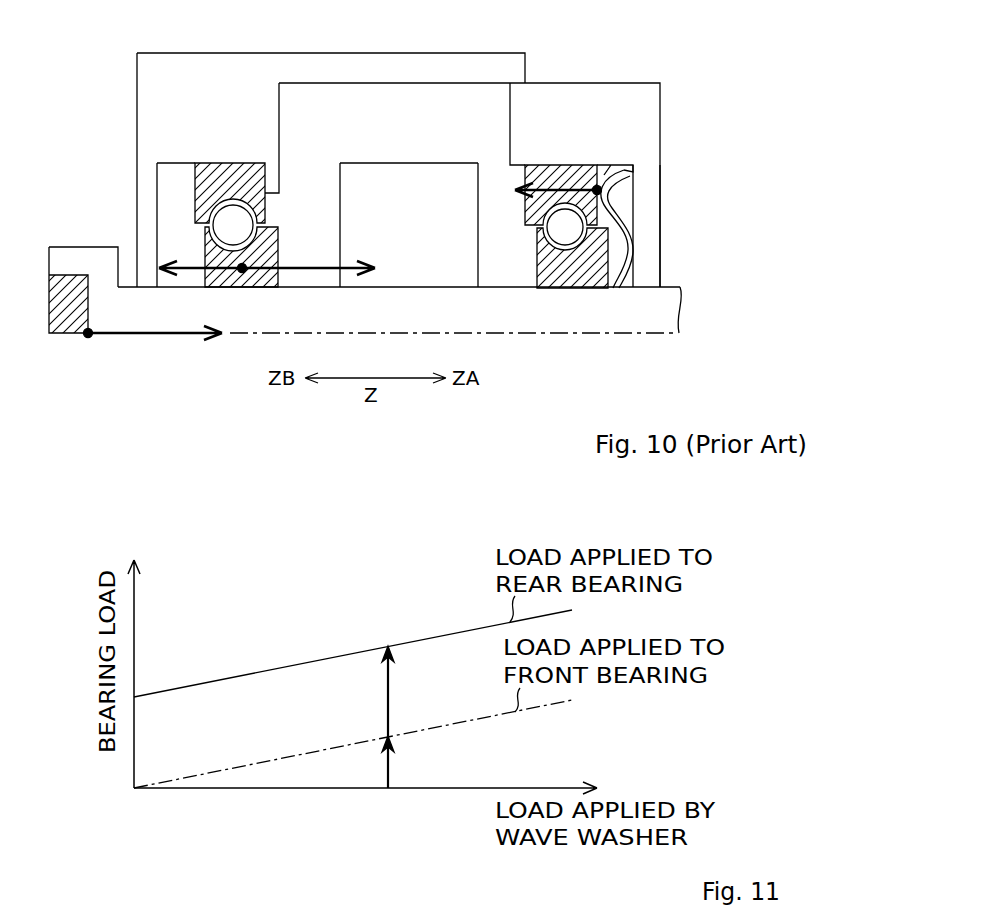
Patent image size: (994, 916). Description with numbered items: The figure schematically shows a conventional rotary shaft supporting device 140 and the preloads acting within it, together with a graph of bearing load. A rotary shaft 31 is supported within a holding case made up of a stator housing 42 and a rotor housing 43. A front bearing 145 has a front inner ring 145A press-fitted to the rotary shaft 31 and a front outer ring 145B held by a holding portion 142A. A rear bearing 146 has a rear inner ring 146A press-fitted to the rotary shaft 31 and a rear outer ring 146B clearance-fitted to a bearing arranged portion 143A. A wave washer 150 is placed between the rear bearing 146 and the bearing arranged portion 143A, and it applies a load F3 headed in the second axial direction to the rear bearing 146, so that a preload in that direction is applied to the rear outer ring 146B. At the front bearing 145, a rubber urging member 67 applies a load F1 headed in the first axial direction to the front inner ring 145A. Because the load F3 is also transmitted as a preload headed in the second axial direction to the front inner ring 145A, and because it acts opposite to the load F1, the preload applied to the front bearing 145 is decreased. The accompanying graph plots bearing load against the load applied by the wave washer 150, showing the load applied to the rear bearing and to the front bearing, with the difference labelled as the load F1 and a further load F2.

In FIG. 10, the stator housing 42 is at (489, 62).
In FIG. 10, the rotor housing 43 is at (618, 92).
In FIG. 10, the holding portion 142A is at (140, 154).
In FIG. 10, the bearing arranged portion 143A is at (656, 198).
In FIG. 10, the front bearing 145 is at (197, 204).
In FIG. 10, the front inner ring 145A is at (278, 248).
In FIG. 10, the front outer ring 145B is at (195, 193).
In FIG. 10, the rear bearing 146 is at (508, 212).
In FIG. 10, the rear inner ring 146A is at (537, 247).
In FIG. 10, the rear outer ring 146B is at (526, 205).
In FIG. 10, the wave washer 150 is at (614, 165).
In FIG. 10, the urging member 67 is at (72, 336).
In FIG. 10, the rotary shaft 31 is at (588, 324).
In FIG. 10, the conventional rotary shaft supporting device 140 is at (697, 358).
In FIG. 10, the load F1 is at (152, 337).
In FIG. 11, the load F1 is at (390, 688).
In FIG. 11, the load F2 is at (390, 768).
In FIG. 10, the load F3 is at (185, 273).